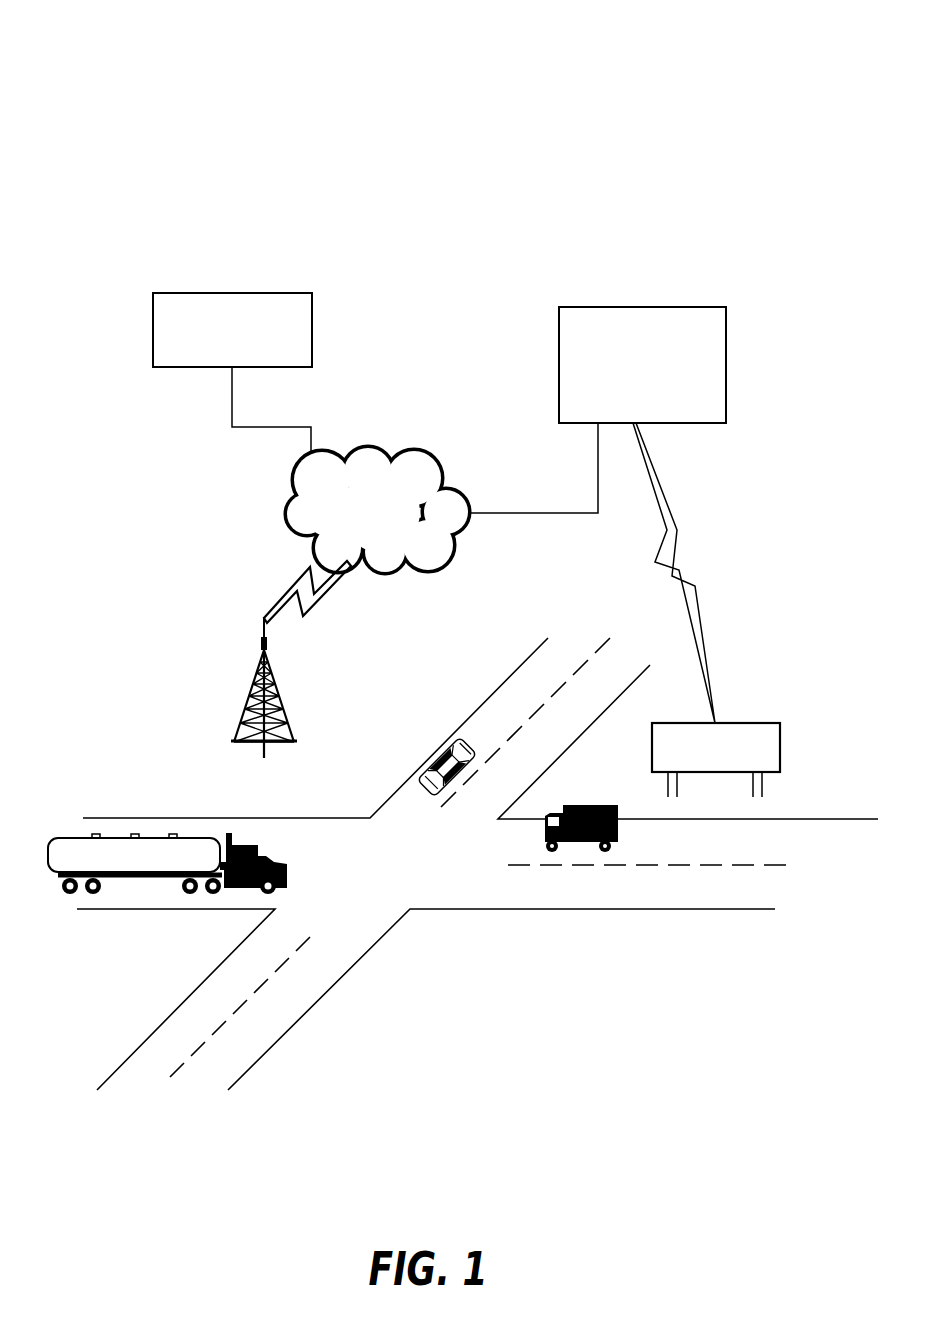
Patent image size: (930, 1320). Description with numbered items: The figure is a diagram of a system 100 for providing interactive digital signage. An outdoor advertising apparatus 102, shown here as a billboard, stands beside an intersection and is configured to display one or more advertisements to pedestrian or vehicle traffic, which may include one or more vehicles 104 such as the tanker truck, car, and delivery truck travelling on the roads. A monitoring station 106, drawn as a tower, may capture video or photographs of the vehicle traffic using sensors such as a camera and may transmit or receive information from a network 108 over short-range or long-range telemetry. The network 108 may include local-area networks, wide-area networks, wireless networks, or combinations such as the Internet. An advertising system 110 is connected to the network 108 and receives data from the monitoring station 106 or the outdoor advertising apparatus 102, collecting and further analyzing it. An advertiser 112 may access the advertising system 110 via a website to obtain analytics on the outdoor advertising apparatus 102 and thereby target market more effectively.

The system 100 is at (720, 50).
The outdoor advertising apparatus 102 is at (732, 723).
The vehicles 104 is at (270, 862).
The monitoring station 106 is at (275, 678).
The network 108 is at (345, 452).
The advertising system 110 is at (660, 307).
The advertiser 112 is at (243, 293).